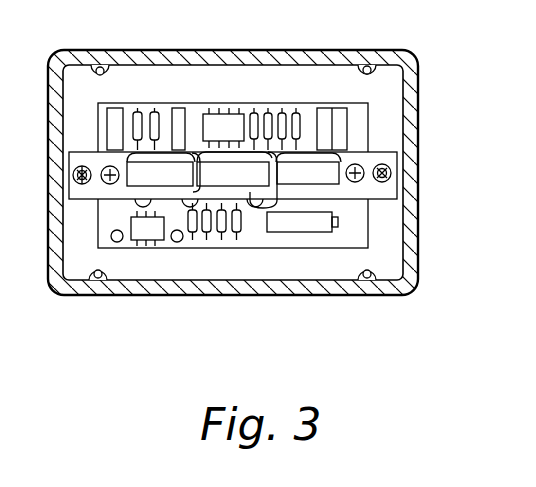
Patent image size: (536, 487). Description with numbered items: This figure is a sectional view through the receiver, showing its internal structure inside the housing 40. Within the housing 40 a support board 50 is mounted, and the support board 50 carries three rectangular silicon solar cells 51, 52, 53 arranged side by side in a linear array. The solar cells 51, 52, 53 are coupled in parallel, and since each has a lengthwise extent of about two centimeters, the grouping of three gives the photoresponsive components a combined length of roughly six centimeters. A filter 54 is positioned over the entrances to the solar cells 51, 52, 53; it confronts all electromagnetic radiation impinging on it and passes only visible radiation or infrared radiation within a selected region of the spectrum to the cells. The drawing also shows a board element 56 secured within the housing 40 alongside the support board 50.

The housing 40 is at (175, 52).
The ground terminal screw 50 is at (80, 172).
The first terminal 51 is at (148, 177).
The second terminal 52 is at (232, 175).
The third terminal 53 is at (303, 177).
The terminal strip 54 is at (385, 150).
The printed circuit board 56 is at (370, 108).